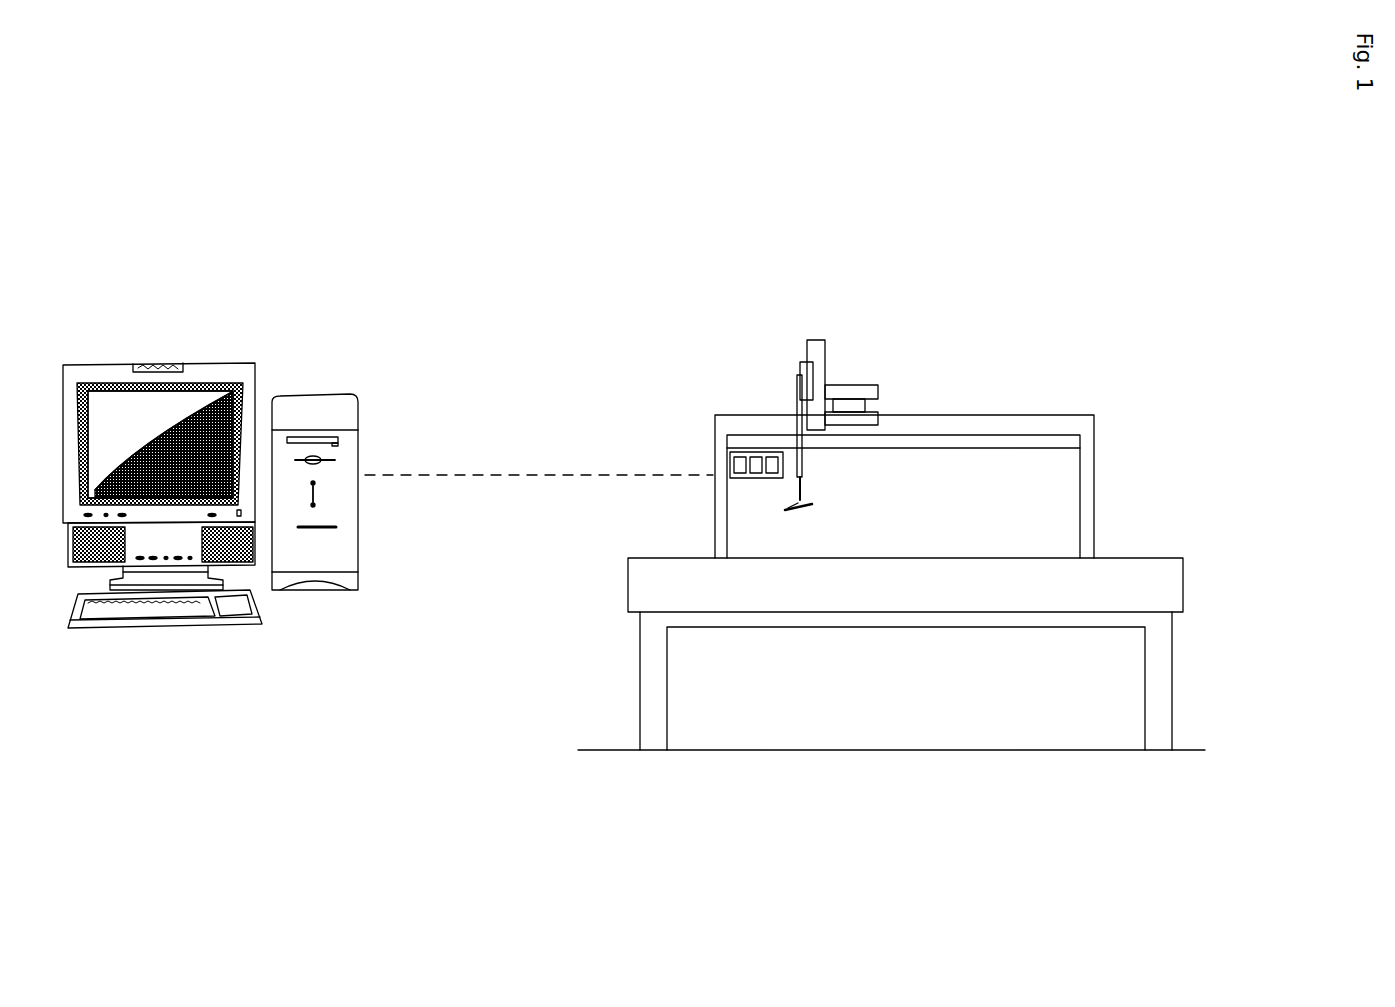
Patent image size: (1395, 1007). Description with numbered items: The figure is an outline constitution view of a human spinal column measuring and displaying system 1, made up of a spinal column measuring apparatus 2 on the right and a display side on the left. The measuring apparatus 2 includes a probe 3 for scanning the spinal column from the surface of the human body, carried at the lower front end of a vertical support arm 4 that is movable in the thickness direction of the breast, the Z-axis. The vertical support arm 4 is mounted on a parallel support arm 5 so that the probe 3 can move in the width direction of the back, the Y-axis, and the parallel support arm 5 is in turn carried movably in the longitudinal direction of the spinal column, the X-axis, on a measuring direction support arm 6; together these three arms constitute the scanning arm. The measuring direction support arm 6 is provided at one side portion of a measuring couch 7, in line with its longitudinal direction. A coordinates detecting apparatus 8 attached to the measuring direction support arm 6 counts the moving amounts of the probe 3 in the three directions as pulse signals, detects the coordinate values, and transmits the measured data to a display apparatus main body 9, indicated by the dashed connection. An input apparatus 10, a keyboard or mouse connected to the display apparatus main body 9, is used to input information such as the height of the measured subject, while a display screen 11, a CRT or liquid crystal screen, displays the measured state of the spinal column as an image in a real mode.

The human spinal column measuring and displaying system 1 is at (1028, 223).
The spinal column measuring apparatus 2 is at (1023, 343).
The probe 3 is at (805, 497).
The vertical support arm 4 is at (805, 375).
The parallel support arm 5 is at (852, 392).
The measuring direction support arm 6 is at (1050, 428).
The measuring couch 7 is at (1160, 583).
The coordinates detecting apparatus 8 is at (756, 478).
The display apparatus main body 9 is at (318, 395).
The input apparatus 10 is at (210, 632).
The display screen 11 is at (210, 363).